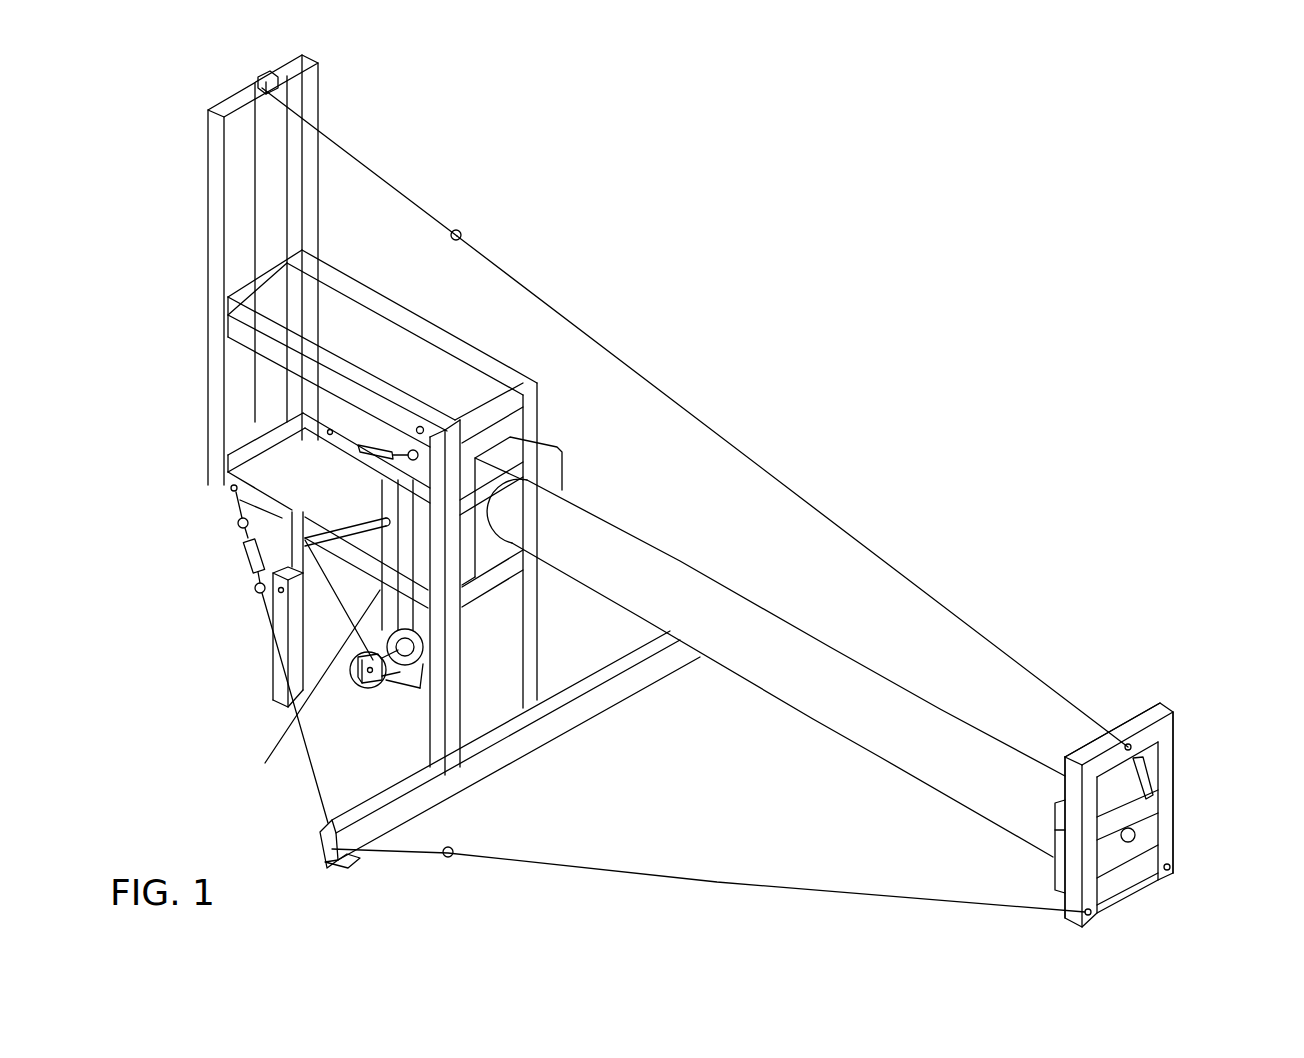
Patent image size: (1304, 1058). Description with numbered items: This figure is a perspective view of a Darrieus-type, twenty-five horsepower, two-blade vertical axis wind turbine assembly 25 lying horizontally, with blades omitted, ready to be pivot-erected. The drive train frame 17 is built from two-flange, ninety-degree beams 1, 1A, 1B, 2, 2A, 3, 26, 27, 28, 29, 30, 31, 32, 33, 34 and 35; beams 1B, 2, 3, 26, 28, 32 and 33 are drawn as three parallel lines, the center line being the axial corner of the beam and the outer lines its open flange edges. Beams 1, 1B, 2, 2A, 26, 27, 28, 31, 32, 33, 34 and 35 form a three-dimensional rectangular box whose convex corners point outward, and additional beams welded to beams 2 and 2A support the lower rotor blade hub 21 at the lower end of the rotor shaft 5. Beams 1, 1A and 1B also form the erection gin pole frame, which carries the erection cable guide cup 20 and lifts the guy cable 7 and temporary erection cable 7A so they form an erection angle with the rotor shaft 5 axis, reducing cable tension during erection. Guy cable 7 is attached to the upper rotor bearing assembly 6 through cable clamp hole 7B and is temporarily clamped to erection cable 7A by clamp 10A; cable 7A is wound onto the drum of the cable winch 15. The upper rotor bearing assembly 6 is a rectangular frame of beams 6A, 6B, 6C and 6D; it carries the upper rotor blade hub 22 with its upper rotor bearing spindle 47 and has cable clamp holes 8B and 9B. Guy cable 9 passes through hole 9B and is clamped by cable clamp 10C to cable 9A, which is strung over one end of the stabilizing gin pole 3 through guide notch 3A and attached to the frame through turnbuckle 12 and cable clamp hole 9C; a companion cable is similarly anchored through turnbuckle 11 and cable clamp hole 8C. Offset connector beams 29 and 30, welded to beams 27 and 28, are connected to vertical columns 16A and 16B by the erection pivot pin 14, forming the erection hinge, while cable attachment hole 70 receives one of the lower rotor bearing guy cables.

The two flange 90 degree beam 1 is at (208, 170).
The two flange 90 degree beam 1A is at (228, 108).
The two flange 90 degree beam 1B is at (318, 100).
The erection cable guide cup 20 is at (258, 80).
The guy cable 7 is at (655, 392).
The temporary erection cable 7A is at (400, 192).
The cable clamp hole 7B is at (1130, 744).
The cable clamp 10A is at (463, 232).
The cable clamp 10C is at (453, 848).
The drive train frame 17 is at (502, 150).
The vertical axis wind turbine assembly 25 is at (1054, 178).
The two flange 90 degree beam 31 is at (240, 290).
The two flange 90 degree beam 35 is at (405, 308).
The two flange 90 degree beam 26 is at (348, 365).
The two flange 90 degree beam 33 is at (463, 410).
The two flange 90 degree beam 2A is at (540, 620).
The cable attachment hole 70 is at (418, 427).
The turnbuckle 11 is at (395, 450).
The cable clamp hole 8C is at (328, 431).
The two flange 90 degree beam 32 is at (232, 450).
The two flange 90 degree beam 28 is at (340, 466).
The offset connector beam 30 is at (385, 503).
The offset connector beam 29 is at (306, 524).
The erection pivot pin 14 is at (332, 562).
The cable clamp hole 9C is at (231, 488).
The two flange 90 degree beam 27 is at (245, 530).
The turnbuckle 12 is at (250, 573).
The vertical metal column 16A is at (270, 668).
The vertical metal column 16B is at (380, 595).
The cable winch 15 is at (362, 700).
The two flange 90 degree beam 2 is at (427, 736).
The two flange 90 degree beam 34 is at (495, 592).
The lower rotor blade hub 21 is at (562, 436).
The rotor shaft 5 is at (800, 712).
The stabilizing gin pole 3 is at (535, 745).
The cable 9A is at (322, 803).
The guide notch 3A is at (330, 845).
The guy cable 9 is at (705, 875).
The cable clamp hole 9B is at (1085, 912).
The upper rotor bearing assembly 6 is at (1140, 610).
The two flange beam 6A is at (1176, 800).
The two flange beam 6B is at (1120, 724).
The two flange beam 6C is at (1063, 910).
The two flange beam 6D is at (1130, 900).
The upper rotor bearing spindle 47 is at (1135, 830).
The cable clamp hole 8B is at (1170, 866).
The upper rotor blade hub 22 is at (1025, 855).